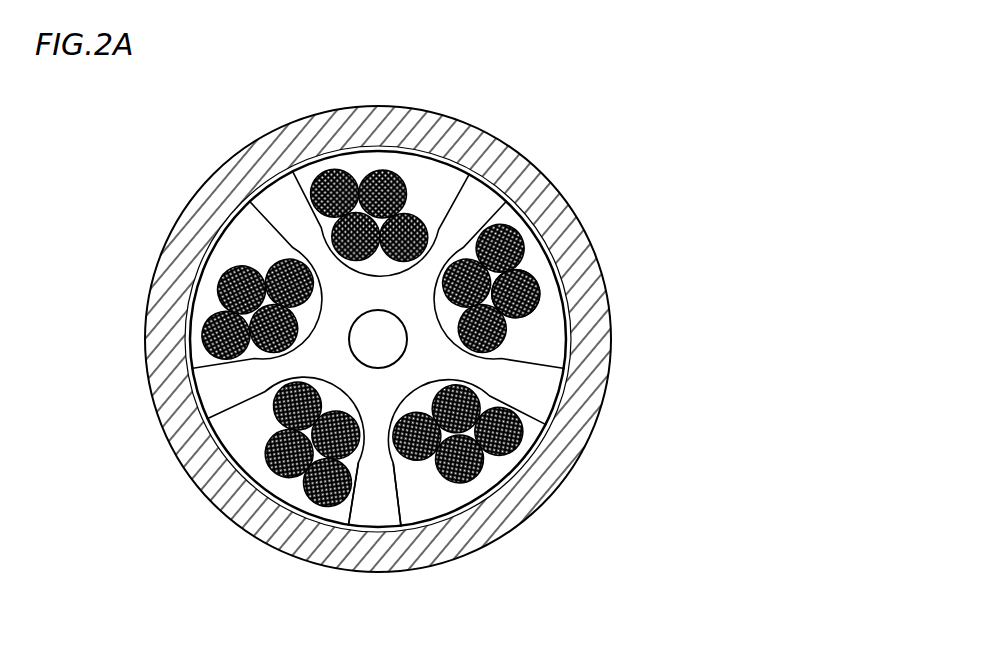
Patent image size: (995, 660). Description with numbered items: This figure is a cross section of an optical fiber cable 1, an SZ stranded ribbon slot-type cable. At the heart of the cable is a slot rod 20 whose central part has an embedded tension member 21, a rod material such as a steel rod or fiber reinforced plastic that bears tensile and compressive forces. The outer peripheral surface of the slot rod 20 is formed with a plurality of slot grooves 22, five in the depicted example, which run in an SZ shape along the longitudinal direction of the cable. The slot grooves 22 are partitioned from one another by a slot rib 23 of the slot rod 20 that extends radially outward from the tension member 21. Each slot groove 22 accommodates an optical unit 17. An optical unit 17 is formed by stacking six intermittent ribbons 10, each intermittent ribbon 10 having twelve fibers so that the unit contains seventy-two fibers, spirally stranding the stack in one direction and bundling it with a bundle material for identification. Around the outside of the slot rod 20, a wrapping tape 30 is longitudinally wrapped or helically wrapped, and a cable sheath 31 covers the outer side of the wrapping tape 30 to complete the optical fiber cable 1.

The optical fiber cable 1 is at (571, 137).
The intermittent ribbon 10 is at (518, 232).
The optical unit 17 is at (542, 289).
The slot rod 20 is at (265, 184).
The tension member 21 is at (355, 347).
The slot groove 22 is at (553, 330).
The slot rib 23 is at (371, 514).
The wrapping tape 30 is at (555, 455).
The cable sheath 31 is at (183, 236).